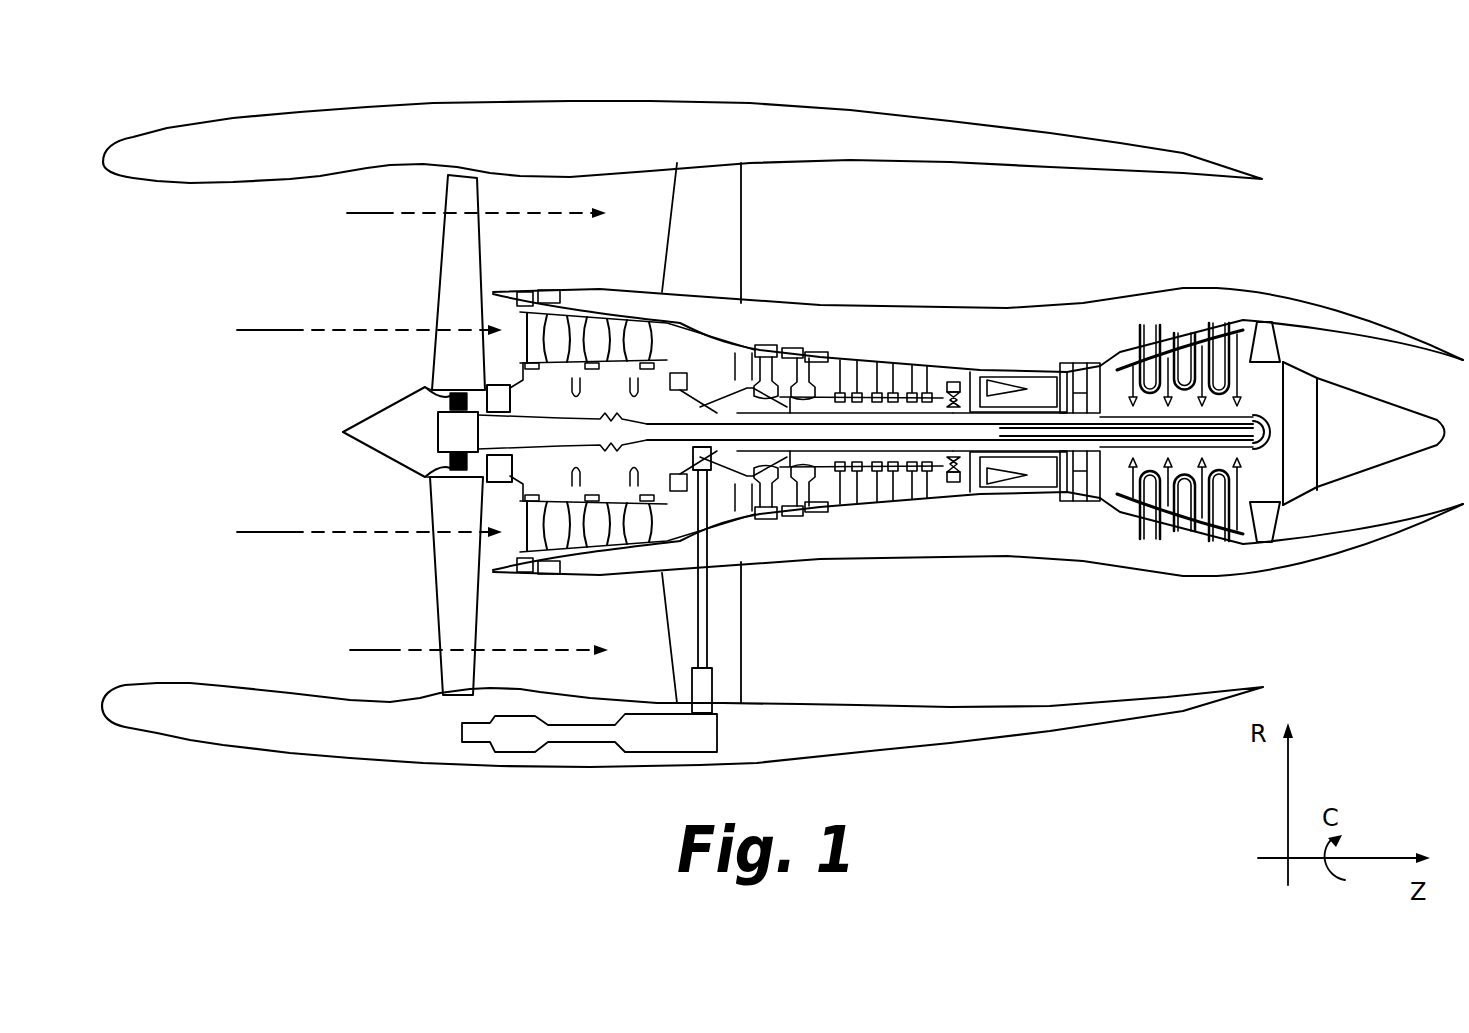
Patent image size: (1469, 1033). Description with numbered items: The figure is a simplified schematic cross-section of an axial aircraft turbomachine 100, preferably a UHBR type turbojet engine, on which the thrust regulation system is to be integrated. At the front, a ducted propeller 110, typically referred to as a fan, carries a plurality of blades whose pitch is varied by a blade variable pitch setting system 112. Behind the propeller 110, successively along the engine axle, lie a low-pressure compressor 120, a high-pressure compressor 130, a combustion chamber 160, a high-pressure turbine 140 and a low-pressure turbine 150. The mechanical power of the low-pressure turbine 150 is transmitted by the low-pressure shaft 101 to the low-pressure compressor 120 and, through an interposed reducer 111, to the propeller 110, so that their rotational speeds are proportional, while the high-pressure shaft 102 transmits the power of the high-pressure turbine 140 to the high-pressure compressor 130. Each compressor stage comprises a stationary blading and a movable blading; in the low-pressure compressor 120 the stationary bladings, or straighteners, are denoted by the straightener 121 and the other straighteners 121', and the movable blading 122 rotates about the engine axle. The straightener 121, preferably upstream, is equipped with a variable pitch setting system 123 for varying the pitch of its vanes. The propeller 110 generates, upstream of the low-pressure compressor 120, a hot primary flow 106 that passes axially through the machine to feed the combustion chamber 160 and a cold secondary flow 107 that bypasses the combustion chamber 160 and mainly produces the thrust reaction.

The aircraft turbomachine 100 is at (1362, 225).
The low-pressure shaft 101 is at (648, 427).
The high-pressure shaft 102 is at (928, 447).
The primary flow 106 is at (369, 420).
The secondary flow 107 is at (477, 420).
The propeller 110 is at (455, 287).
The reducer 111 is at (487, 473).
The blade variable pitch setting system 112 is at (438, 434).
The low-pressure compressor 120 is at (538, 603).
The straightener 121 is at (554, 561).
The other straighteners 121' is at (601, 563).
The movable blading 122 is at (616, 503).
The variable pitch setting system 123 is at (520, 292).
The high-pressure compressor 130 is at (859, 526).
The high-pressure turbine 140 is at (1078, 354).
The low-pressure turbine 150 is at (1237, 302).
The combustion chamber 160 is at (1022, 387).